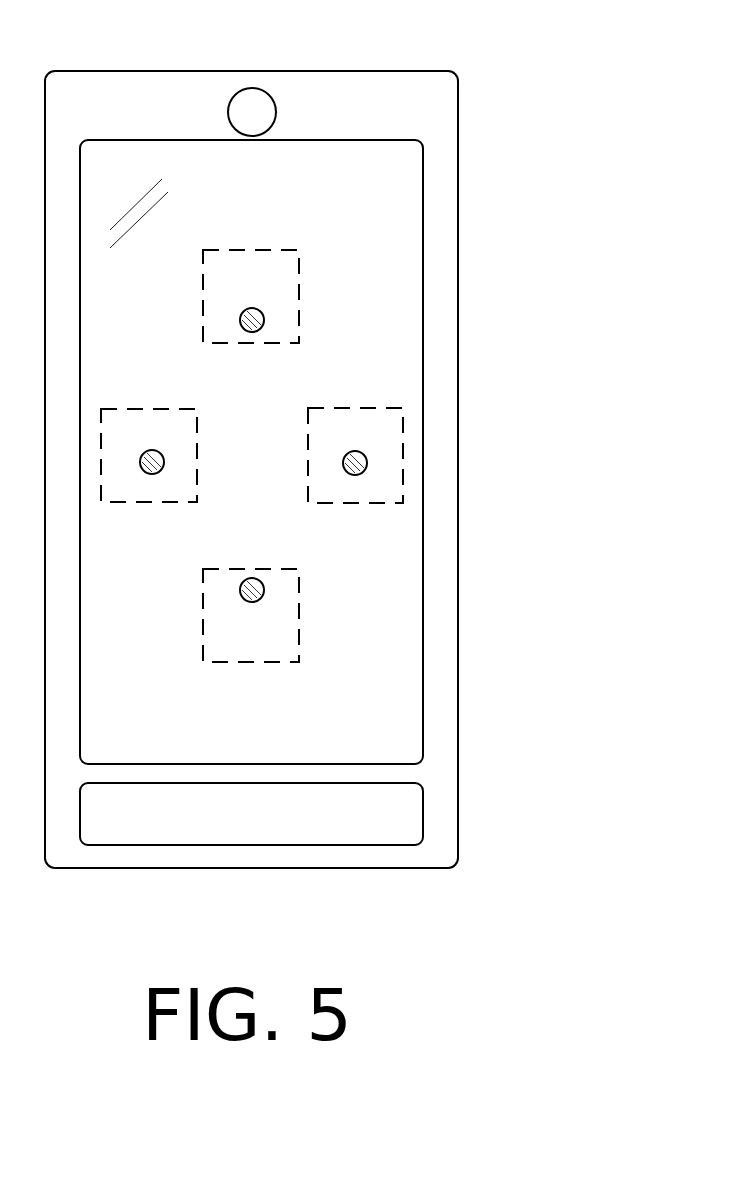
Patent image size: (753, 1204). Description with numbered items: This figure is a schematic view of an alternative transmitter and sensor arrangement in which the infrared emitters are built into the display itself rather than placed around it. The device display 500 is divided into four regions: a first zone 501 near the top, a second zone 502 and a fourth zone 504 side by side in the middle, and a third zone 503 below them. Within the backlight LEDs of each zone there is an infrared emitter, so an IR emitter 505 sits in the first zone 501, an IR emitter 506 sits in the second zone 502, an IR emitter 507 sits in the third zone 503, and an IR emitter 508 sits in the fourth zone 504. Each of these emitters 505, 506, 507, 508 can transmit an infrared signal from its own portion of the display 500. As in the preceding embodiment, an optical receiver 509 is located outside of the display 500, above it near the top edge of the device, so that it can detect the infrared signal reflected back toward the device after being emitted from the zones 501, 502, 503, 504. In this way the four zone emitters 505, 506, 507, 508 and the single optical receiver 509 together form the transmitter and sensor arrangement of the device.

The device display 500 is at (389, 237).
The first zone 501 is at (228, 286).
The second zone 502 is at (127, 439).
The third zone 503 is at (229, 649).
The fourth zone 504 is at (332, 439).
The IR emitter 505 is at (265, 317).
The IR emitter 506 is at (165, 460).
The IR emitter 507 is at (265, 592).
The IR emitter 508 is at (368, 462).
The optical receiver 509 is at (251, 113).